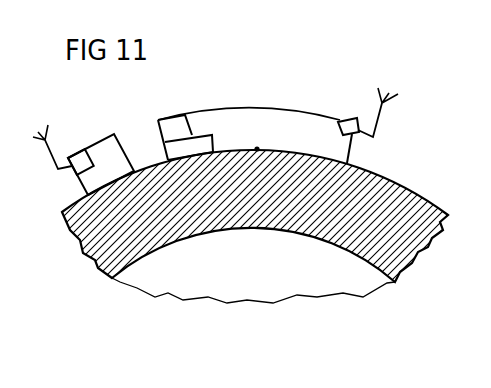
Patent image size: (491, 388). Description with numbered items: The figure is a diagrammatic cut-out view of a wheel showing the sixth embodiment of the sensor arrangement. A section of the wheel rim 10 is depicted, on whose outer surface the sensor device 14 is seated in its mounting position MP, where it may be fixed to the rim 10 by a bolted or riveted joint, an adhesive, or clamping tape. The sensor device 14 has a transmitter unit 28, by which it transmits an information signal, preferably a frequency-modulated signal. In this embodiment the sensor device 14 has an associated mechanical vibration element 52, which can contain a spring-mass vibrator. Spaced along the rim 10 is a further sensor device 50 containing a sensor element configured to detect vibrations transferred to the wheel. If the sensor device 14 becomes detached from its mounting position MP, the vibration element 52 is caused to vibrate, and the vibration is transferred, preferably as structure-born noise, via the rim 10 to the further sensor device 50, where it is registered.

The rim 10 is at (280, 228).
The sensor device 14 is at (257, 120).
The transmitter unit 28 is at (343, 118).
The further sensor device 50 is at (102, 152).
The mechanical vibration element 52 is at (195, 145).
The mounting position MP is at (257, 151).